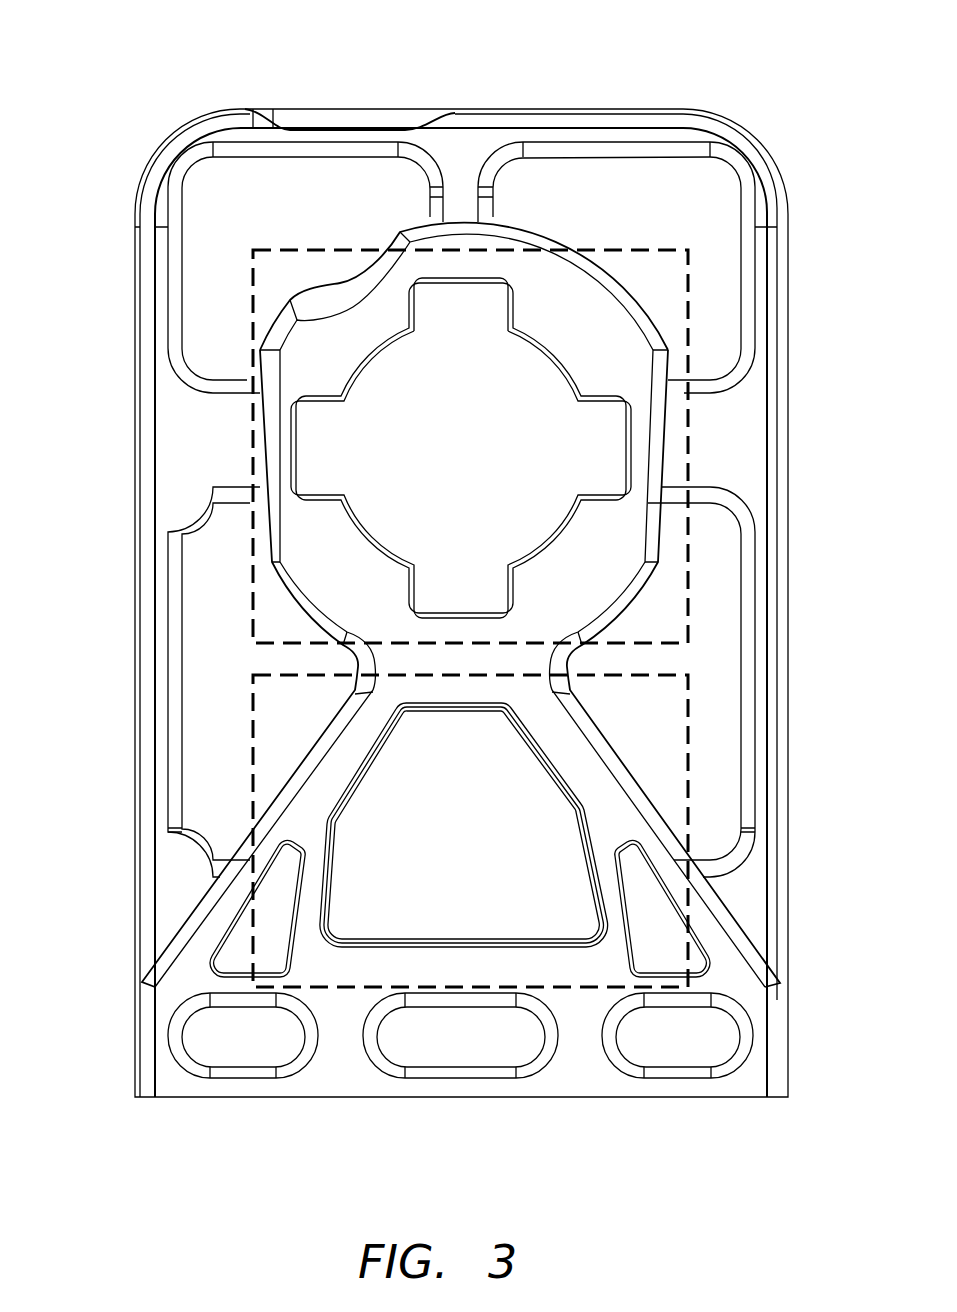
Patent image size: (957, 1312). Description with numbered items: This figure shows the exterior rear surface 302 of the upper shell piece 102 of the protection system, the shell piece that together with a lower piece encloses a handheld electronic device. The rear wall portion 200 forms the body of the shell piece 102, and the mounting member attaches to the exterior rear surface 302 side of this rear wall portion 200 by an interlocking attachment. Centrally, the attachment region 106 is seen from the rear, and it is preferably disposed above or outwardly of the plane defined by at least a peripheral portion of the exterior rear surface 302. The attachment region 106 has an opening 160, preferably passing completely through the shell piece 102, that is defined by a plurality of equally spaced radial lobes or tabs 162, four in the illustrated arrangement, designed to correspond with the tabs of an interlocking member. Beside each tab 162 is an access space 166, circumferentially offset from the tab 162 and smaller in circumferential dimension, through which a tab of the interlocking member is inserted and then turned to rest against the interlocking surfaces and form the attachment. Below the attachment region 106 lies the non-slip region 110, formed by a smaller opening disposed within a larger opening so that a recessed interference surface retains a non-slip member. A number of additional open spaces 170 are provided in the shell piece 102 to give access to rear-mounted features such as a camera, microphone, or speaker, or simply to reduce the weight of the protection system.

The upper shell piece 102 is at (190, 72).
The rear wall portion 200 is at (462, 150).
The open spaces 170 is at (628, 270).
The access space 166 is at (459, 283).
The tab 162 is at (523, 338).
The opening 160 is at (553, 362).
The exterior rear surface 302 is at (200, 440).
The attachment region 106 is at (688, 455).
The non-slip region 110 is at (688, 760).